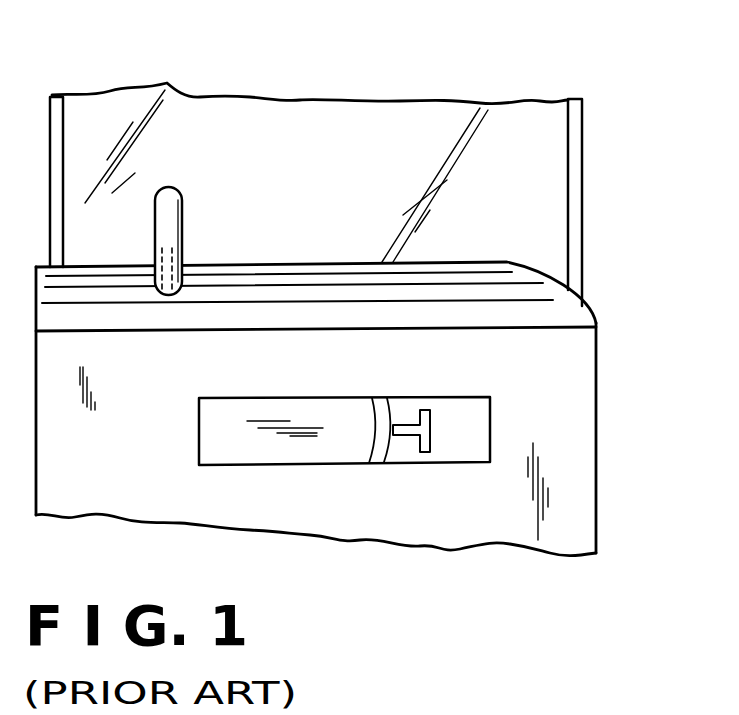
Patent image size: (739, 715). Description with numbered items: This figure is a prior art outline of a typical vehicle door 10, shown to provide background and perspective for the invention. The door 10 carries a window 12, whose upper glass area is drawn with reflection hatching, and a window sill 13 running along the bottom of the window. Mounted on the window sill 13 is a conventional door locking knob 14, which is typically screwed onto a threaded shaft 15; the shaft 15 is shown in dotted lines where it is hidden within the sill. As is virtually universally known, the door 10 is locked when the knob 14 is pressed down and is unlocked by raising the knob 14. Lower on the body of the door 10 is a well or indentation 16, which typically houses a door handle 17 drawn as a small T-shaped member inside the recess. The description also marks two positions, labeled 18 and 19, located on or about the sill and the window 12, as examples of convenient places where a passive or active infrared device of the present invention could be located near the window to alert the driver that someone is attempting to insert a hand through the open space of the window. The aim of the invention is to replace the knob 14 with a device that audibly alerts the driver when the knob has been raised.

The vehicle door 10 is at (623, 314).
The window 12 is at (558, 177).
The window sill 13 is at (590, 312).
The door locking knob 14 is at (168, 210).
The threaded shaft 15 is at (173, 247).
The well or indentation 16 is at (460, 443).
The door handle 17 is at (427, 456).
The position for infrared device 18 is at (465, 307).
The position for infrared device 19 is at (480, 120).